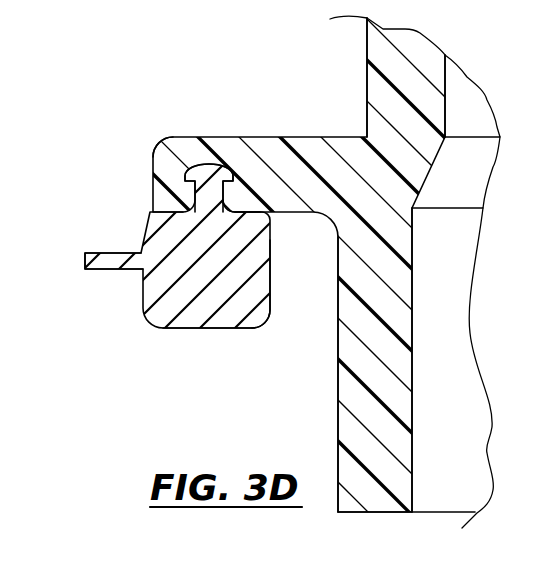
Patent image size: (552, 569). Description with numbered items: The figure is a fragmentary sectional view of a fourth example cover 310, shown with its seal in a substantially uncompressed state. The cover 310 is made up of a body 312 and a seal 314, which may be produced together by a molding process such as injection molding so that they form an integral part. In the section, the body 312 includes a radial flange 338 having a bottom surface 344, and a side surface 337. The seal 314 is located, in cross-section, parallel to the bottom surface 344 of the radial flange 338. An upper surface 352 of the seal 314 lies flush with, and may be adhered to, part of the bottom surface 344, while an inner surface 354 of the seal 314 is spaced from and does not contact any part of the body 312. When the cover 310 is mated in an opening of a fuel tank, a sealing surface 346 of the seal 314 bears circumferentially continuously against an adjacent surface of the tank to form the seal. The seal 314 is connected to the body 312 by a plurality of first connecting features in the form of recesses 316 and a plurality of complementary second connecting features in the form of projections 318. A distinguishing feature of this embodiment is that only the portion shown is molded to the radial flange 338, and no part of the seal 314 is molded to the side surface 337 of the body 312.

The cover 310 is at (115, 172).
The body 312 is at (379, 86).
The seal 314 is at (158, 273).
The recesses 316 is at (205, 178).
The projections 318 is at (201, 192).
The side surface 337 is at (338, 332).
The radial flange 338 is at (168, 152).
The bottom surface 344 is at (148, 218).
The sealing surface 346 is at (209, 320).
The upper surface 352 is at (250, 216).
The inner surface 354 is at (273, 275).